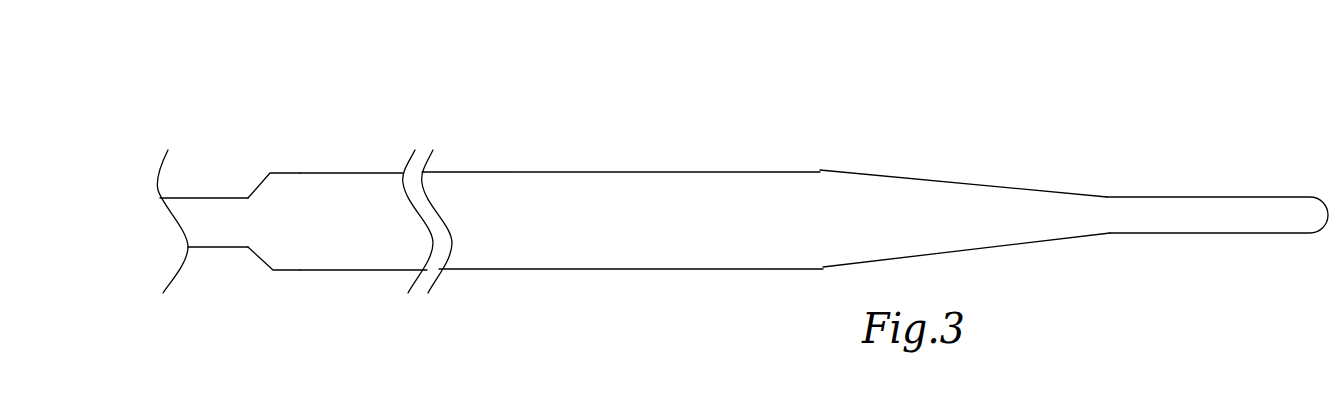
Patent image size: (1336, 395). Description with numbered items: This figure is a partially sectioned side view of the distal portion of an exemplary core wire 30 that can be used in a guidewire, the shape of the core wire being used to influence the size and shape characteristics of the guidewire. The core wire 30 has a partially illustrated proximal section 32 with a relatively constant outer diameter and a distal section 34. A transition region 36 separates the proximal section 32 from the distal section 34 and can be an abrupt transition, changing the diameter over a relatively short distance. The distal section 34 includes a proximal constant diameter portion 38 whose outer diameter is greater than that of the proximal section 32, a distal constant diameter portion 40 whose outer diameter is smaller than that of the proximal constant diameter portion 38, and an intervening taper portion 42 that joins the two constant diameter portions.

The core wire 30 is at (597, 169).
The proximal section 32 is at (221, 123).
The distal section 34 is at (818, 98).
The transition region 36 is at (275, 188).
The proximal constant diameter portion 38 is at (522, 237).
The distal constant diameter portion 40 is at (1232, 217).
The taper portion 42 is at (997, 230).